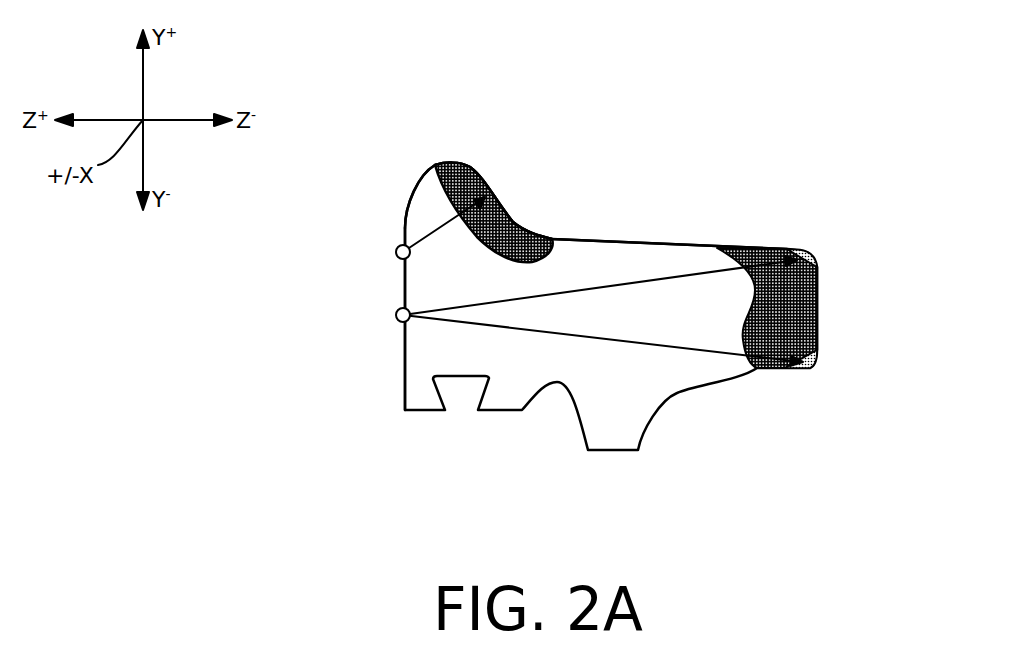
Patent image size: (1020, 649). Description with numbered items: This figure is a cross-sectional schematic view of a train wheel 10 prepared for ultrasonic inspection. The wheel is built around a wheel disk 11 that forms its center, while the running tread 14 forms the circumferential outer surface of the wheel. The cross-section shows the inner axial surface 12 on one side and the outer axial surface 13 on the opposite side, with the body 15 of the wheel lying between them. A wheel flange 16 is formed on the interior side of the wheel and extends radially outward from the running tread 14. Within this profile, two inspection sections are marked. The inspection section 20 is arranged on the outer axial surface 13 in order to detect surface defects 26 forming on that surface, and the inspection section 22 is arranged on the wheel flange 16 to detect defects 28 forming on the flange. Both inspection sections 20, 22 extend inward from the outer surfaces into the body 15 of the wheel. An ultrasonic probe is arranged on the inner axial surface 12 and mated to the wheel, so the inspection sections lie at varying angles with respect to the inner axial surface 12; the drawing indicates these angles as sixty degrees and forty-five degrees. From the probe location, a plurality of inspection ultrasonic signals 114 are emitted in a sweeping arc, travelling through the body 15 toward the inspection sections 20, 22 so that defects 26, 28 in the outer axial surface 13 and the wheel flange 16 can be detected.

The train wheel 10 is at (328, 213).
The wheel disk 11 is at (647, 435).
The inner axial surface 12 is at (404, 362).
The outer axial surface 13 is at (812, 297).
The running tread 14 is at (587, 245).
The body 15 is at (630, 270).
The wheel flange 16 is at (418, 172).
The inspection section 20 is at (812, 328).
The inspection section 22 is at (477, 167).
The surface defects 26 is at (812, 258).
The defects 28 is at (497, 190).
The inspection ultrasonic signals 114 is at (433, 234).